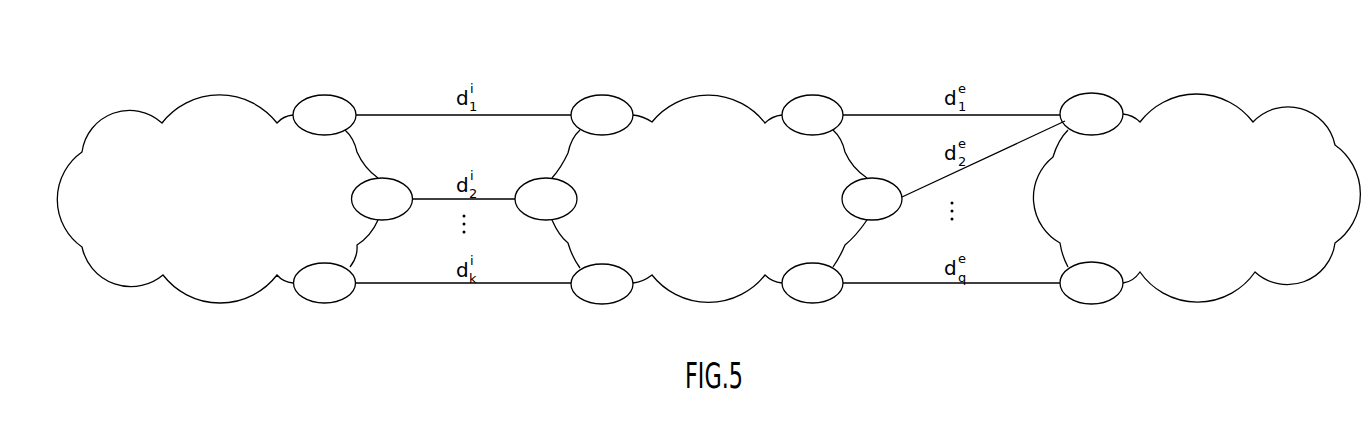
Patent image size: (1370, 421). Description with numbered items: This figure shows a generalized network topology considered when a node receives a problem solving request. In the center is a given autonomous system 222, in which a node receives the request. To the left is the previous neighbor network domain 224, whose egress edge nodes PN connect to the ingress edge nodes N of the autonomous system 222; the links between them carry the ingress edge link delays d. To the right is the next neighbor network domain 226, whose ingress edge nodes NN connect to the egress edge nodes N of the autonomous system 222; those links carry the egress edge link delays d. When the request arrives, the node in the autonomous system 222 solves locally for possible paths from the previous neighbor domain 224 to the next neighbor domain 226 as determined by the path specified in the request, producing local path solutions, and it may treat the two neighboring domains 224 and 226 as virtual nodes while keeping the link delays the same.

The previous neighbor network domain 224 is at (185, 102).
The autonomous system 222 is at (675, 102).
The next neighbor network domain 226 is at (1163, 102).